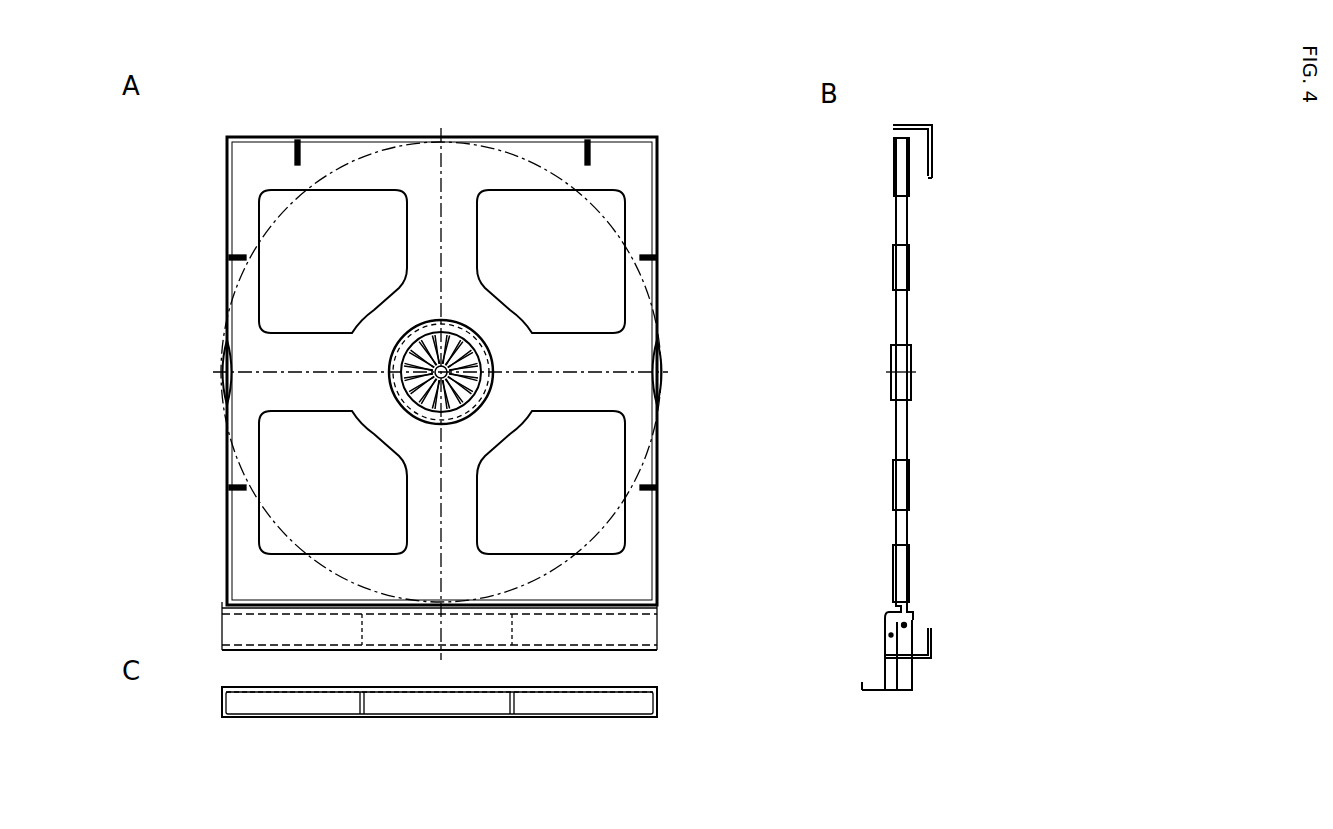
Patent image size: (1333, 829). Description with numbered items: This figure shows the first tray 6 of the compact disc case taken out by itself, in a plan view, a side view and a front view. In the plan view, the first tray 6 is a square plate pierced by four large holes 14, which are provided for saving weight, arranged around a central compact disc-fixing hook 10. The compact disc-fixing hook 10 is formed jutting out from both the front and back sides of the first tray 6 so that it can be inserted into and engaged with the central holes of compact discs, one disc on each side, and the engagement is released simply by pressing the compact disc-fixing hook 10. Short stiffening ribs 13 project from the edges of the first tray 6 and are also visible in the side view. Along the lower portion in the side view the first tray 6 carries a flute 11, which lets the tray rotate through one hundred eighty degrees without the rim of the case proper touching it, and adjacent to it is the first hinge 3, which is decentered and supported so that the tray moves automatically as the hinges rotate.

The first hinge 3 is at (887, 633).
The first tray 6 is at (503, 140).
The compact disc-fixing hook 10 is at (493, 380).
The flute 11 is at (895, 607).
The stiffening ribs 13 is at (296, 140).
The holes 14 is at (628, 232).